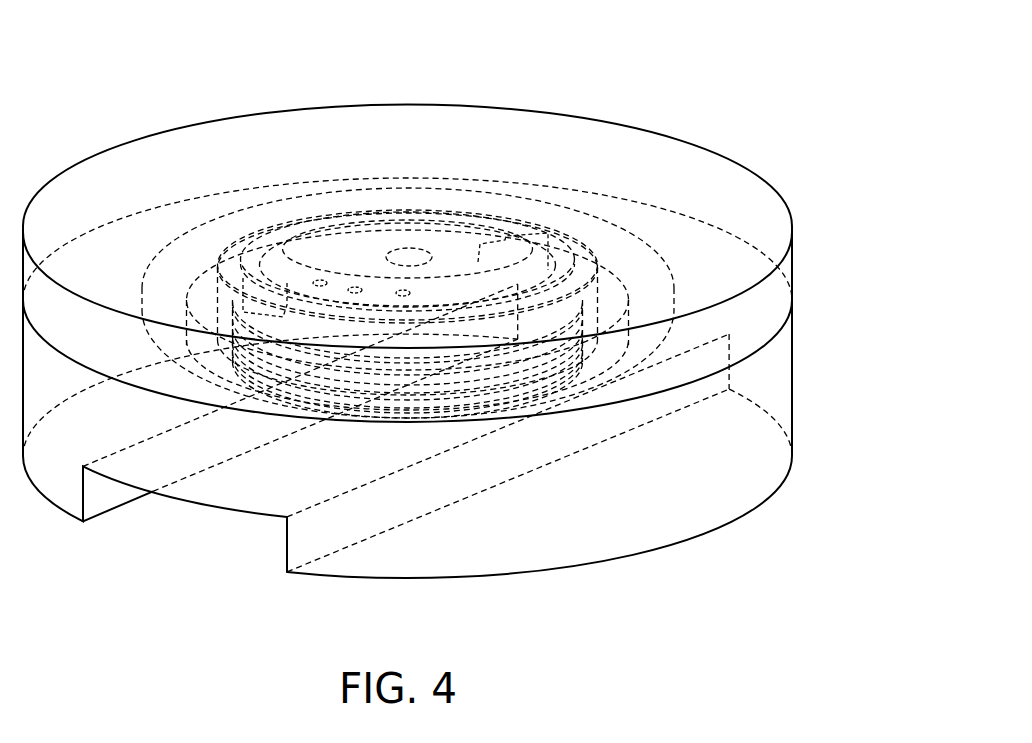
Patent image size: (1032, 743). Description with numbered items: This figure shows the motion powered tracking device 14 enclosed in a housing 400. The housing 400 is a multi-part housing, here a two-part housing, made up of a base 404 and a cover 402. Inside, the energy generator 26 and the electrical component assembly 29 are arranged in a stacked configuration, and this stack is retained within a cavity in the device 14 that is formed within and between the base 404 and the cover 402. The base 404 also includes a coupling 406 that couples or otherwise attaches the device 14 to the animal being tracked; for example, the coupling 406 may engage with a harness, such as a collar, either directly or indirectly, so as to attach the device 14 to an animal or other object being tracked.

The device 14 is at (474, 347).
The energy generator 26 is at (546, 194).
The electrical component assembly 29 is at (390, 435).
The housing 400 is at (465, 353).
The cover 402 is at (747, 170).
The base 404 is at (793, 420).
The coupling 406 is at (155, 518).